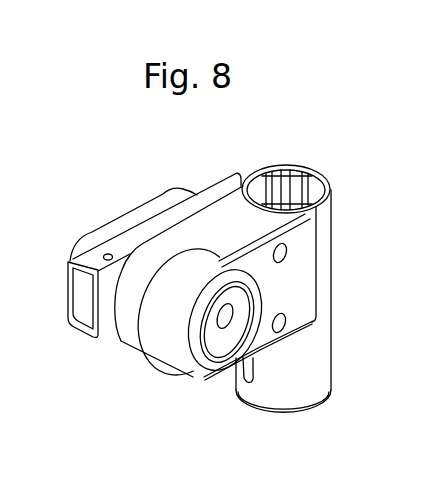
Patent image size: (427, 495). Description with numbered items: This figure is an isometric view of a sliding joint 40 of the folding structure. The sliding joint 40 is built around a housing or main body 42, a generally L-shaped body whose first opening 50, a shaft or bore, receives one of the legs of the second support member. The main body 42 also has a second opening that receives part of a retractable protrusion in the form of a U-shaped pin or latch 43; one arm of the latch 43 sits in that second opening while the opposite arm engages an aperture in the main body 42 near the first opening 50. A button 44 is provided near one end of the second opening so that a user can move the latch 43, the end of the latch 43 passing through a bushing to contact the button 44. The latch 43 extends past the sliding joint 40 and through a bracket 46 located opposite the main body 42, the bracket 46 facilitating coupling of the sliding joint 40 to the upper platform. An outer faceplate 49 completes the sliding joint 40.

The sliding joint 40 is at (203, 164).
The main body 42 is at (140, 343).
The latch 43 is at (142, 212).
The button 44 is at (212, 338).
The bracket 46 is at (68, 287).
The outer faceplate 49 is at (299, 287).
The first opening 50 is at (307, 176).